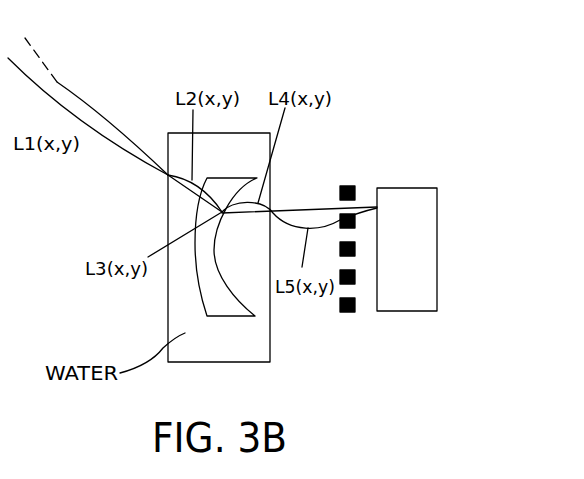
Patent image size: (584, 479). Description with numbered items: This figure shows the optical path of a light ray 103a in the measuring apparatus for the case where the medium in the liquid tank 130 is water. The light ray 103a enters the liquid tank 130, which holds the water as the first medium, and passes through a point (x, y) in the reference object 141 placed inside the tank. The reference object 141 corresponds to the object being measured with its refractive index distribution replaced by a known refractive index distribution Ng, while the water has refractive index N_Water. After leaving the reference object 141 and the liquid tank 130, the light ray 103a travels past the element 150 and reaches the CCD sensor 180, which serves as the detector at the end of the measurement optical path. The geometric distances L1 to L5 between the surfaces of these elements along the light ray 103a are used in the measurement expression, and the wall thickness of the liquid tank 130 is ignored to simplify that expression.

The light ray 103a is at (115, 123).
The liquid tank 130 is at (238, 363).
The reference object 141 is at (230, 320).
The detector array 150 is at (340, 186).
The CCD sensor 180 is at (415, 239).